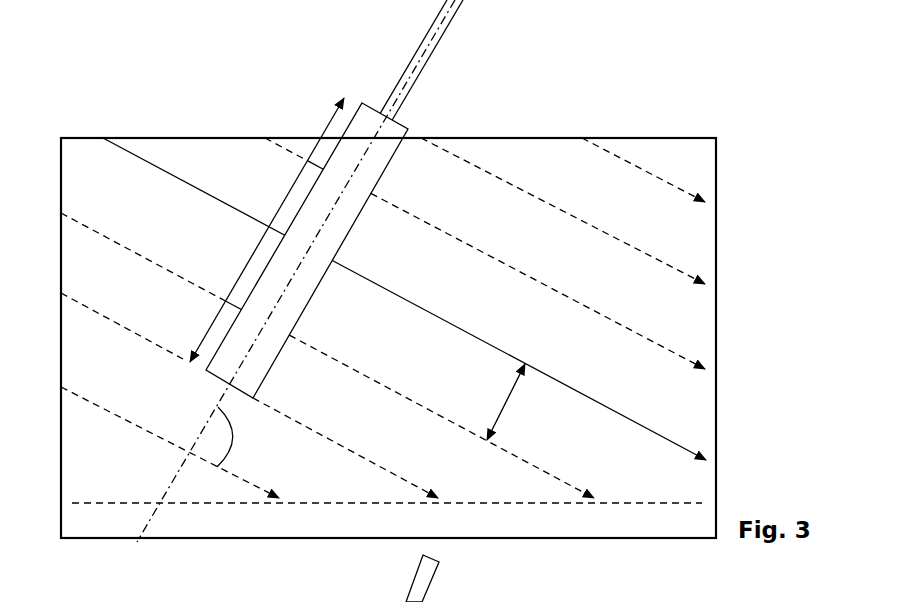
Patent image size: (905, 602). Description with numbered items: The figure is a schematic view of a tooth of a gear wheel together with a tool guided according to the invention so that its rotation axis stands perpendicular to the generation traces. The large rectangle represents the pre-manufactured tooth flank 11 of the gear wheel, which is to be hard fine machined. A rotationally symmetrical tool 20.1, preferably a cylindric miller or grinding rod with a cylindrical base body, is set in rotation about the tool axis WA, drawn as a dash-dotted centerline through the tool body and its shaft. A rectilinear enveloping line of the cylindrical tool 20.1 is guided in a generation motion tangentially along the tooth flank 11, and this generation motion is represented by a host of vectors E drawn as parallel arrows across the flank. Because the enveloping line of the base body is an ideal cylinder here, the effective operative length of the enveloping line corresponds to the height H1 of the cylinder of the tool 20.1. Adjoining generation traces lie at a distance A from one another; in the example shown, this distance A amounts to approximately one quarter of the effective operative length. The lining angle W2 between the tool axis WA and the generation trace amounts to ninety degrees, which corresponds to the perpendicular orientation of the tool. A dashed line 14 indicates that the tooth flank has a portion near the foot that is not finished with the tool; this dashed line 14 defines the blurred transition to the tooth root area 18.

The tooth flank 11 is at (717, 157).
The dashed line 14 is at (638, 503).
The tooth root area 18 is at (207, 523).
The rotationally symmetrical tool 20.1 is at (272, 345).
The vectors E is at (697, 457).
The distance A is at (504, 402).
The height of the cylinder H1 is at (267, 230).
The lining angle W2 is at (245, 437).
The tool axis WA is at (286, 282).